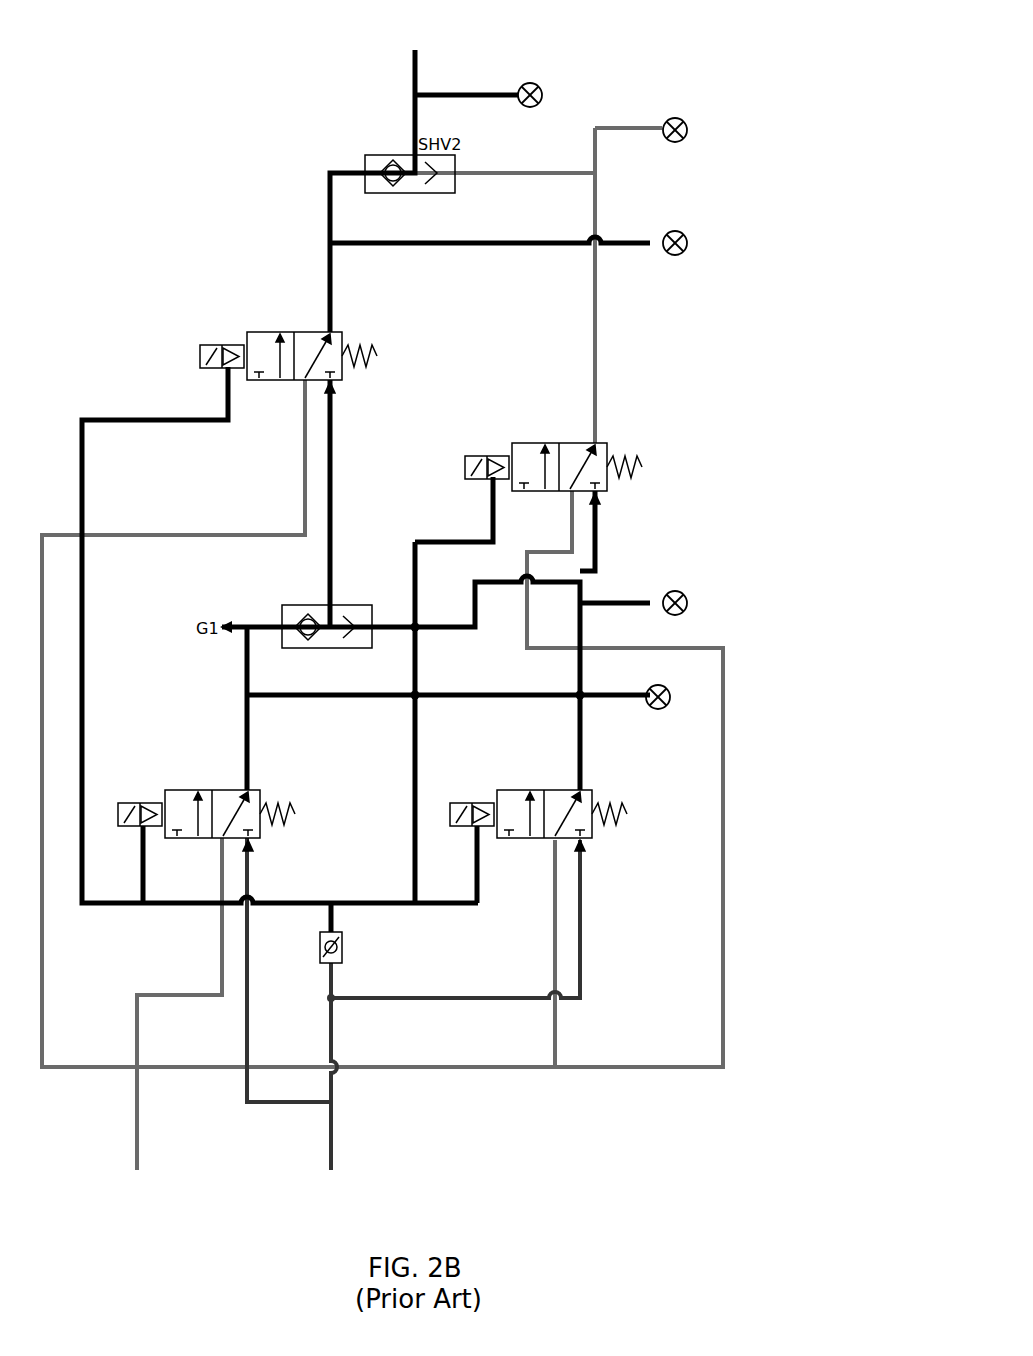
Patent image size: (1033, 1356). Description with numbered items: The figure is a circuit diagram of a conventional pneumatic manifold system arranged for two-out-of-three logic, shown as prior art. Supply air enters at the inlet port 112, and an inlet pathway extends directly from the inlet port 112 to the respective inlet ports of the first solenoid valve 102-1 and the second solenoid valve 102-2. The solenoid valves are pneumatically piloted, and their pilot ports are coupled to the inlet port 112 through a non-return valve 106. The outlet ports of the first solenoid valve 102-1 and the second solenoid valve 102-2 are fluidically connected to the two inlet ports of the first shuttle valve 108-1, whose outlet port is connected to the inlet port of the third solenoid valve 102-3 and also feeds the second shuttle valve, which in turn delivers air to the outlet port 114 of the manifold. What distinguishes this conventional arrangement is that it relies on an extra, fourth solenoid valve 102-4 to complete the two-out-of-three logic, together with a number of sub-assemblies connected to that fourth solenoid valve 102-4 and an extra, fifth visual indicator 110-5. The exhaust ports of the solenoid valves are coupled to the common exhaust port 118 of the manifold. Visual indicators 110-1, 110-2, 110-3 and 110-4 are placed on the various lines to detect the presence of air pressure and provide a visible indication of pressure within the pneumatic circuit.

The outlet port 114 is at (458, 44).
The fifth visual indicator 110-5 is at (576, 92).
The visual indicator 110-4 is at (724, 130).
The visual indicator 110-3 is at (720, 242).
The visual indicator 110-2 is at (724, 600).
The visual indicator 110-1 is at (704, 700).
The third solenoid valve 102-3 is at (386, 352).
The fourth solenoid valve 102-4 is at (646, 467).
The first solenoid valve 102-1 is at (288, 808).
The second solenoid valve 102-2 is at (624, 808).
The first shuttle valve 108-1 is at (332, 598).
The non-return valve 106 is at (334, 975).
The exhaust port 118 is at (196, 1188).
The inlet port 112 is at (358, 1190).